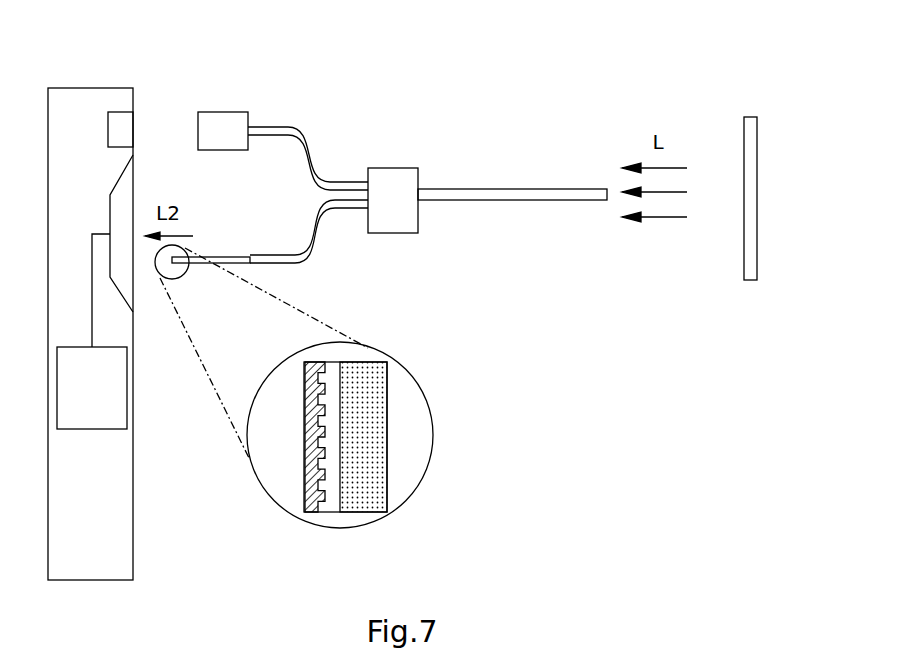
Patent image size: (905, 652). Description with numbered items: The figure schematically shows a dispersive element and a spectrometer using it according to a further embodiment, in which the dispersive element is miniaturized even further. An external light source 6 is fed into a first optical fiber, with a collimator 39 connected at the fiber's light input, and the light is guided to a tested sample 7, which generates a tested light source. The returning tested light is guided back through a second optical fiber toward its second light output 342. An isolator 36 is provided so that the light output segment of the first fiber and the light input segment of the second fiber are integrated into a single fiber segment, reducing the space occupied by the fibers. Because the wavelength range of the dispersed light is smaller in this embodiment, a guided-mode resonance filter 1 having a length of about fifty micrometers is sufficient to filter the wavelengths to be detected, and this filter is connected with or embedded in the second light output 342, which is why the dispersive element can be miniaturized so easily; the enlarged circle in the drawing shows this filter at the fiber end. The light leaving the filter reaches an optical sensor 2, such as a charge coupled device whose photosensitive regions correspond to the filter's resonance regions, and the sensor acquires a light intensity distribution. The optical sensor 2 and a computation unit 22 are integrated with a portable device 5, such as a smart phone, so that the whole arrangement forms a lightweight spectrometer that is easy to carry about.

The guided-mode resonance filter 1 is at (354, 342).
The optical sensor 2 is at (127, 191).
The portable device 5 is at (112, 482).
The external light source 6 is at (122, 128).
The tested sample 7 is at (744, 272).
The computation unit 22 is at (110, 392).
The isolator 36 is at (393, 182).
The collimator 39 is at (221, 122).
The second light output 342 is at (181, 248).